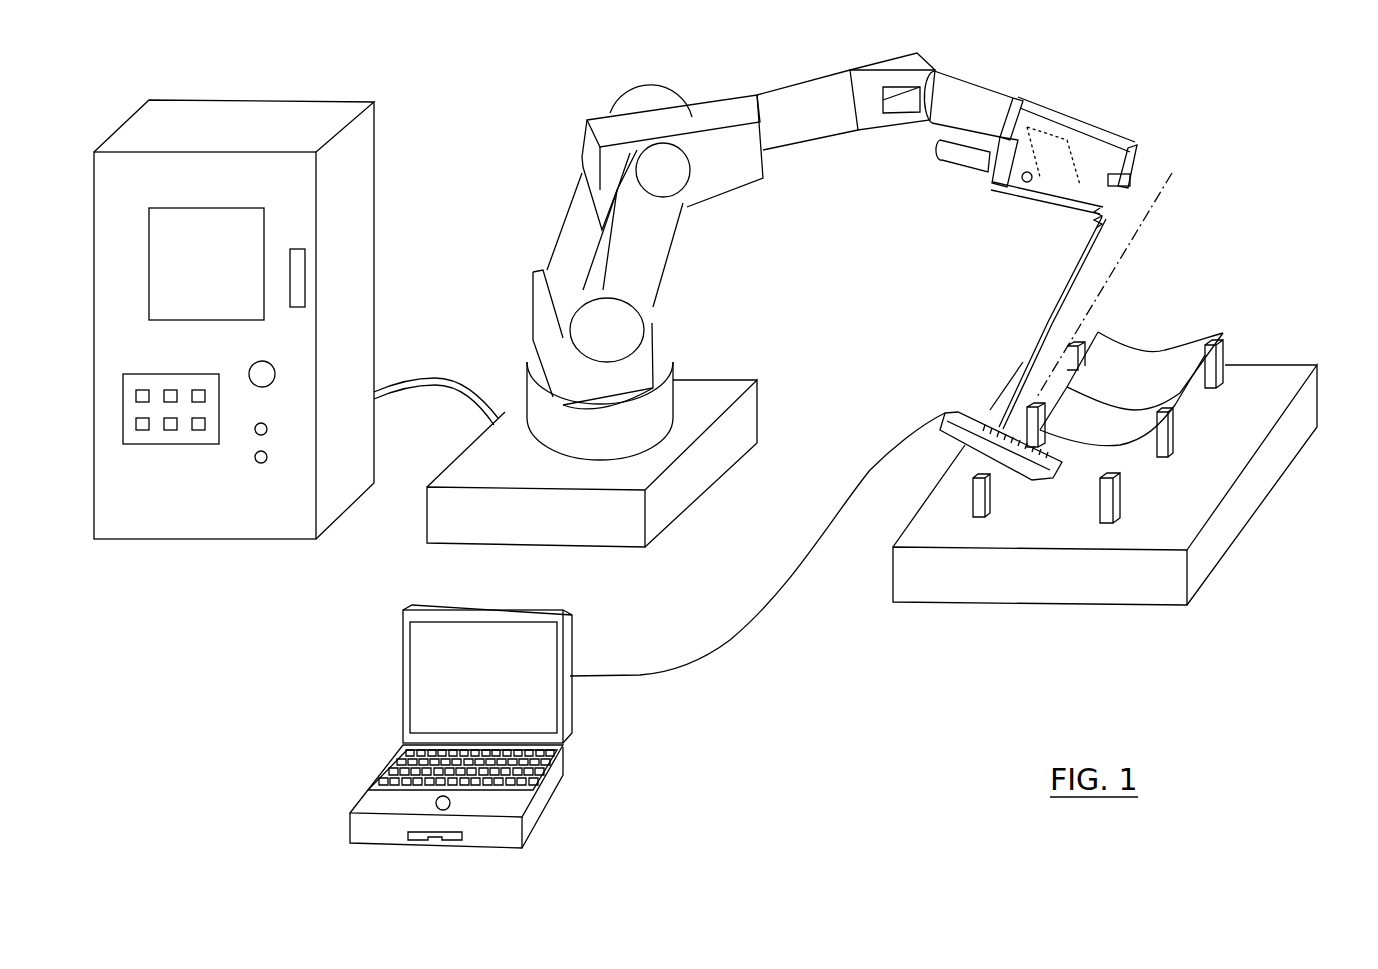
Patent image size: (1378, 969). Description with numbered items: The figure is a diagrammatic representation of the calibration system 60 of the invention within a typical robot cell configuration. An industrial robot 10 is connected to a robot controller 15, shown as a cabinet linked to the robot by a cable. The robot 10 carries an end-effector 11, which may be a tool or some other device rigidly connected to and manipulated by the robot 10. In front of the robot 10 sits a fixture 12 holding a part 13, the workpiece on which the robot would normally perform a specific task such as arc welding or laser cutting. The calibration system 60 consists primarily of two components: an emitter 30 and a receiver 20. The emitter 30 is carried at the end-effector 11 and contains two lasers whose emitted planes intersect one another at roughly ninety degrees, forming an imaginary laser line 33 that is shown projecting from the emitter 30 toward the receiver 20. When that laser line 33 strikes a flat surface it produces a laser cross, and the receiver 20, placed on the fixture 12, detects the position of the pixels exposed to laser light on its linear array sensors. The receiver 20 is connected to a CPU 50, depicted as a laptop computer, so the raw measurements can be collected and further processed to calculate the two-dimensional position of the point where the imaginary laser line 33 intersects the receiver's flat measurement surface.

The industrial robot 10 is at (692, 115).
The end-effector 11 is at (1095, 132).
The fixture 12 is at (990, 527).
The part 13 is at (1122, 358).
The robot controller 15 is at (231, 515).
The receiver 20 is at (982, 413).
The emitter 30 is at (1127, 183).
The imaginary laser line 33 is at (1030, 367).
The CPU 50 is at (553, 777).
The calibration system 60 is at (1212, 102).